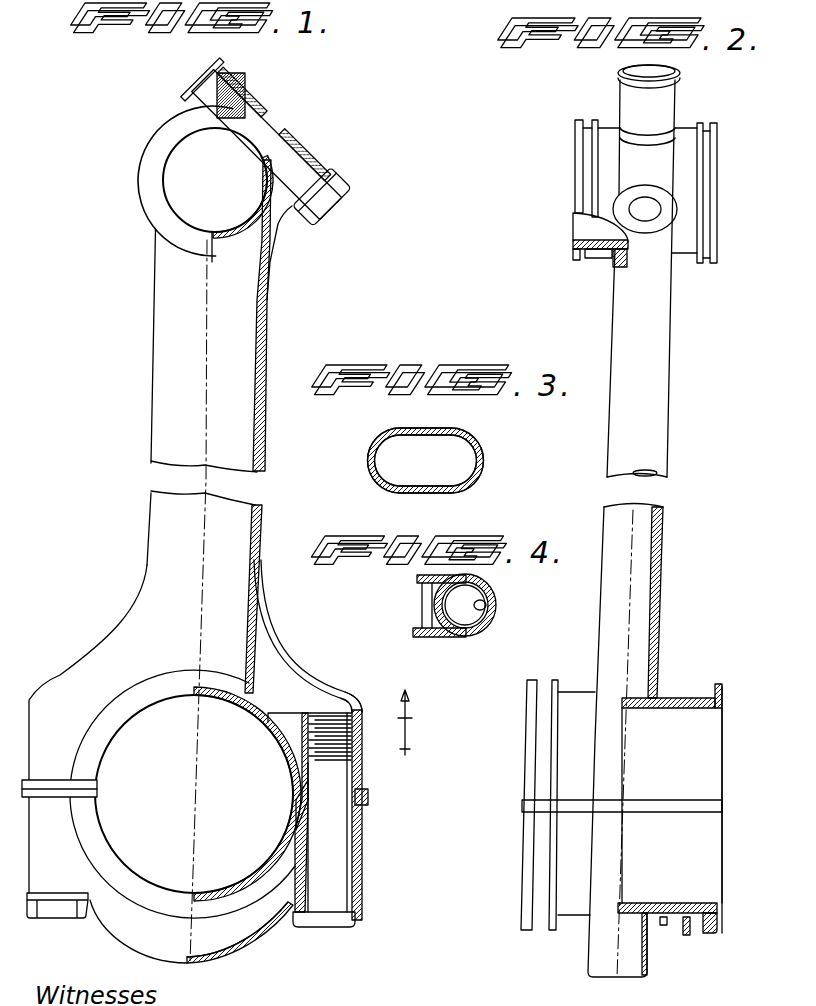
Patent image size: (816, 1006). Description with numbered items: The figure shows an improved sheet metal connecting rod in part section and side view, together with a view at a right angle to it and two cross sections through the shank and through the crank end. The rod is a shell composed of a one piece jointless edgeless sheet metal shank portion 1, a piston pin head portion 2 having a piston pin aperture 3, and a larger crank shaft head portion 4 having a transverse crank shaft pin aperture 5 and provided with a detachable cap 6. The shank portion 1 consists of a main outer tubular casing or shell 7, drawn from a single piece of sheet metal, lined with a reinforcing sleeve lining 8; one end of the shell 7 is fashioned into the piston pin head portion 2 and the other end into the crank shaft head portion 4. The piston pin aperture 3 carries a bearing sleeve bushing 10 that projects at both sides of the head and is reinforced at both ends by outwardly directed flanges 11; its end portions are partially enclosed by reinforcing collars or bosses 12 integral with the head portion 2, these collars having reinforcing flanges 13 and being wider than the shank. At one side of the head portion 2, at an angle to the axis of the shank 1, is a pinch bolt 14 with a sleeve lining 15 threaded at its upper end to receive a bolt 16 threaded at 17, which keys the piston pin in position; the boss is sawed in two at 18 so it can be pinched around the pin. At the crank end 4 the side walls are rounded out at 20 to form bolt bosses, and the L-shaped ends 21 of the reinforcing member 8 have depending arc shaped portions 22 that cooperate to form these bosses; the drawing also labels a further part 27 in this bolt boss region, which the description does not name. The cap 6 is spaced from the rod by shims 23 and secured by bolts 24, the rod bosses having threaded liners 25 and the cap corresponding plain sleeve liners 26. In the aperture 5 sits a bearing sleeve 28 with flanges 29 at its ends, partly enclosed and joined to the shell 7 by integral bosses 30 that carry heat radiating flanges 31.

In FIG. 1, the shank portion 1 is at (152, 362).
In FIG. 2, the shank portion 1 is at (656, 443).
In FIG. 3, the shank portion 1 is at (392, 437).
In FIG. 1, the piston pin head portion 2 is at (148, 142).
In FIG. 2, the piston pin head portion 2 is at (676, 173).
In FIG. 1, the piston pin aperture 3 is at (180, 195).
In FIG. 1, the crank shaft head portion 4 is at (50, 677).
In FIG. 2, the crank shaft head portion 4 is at (556, 763).
In FIG. 4, the crank shaft head portion 4 is at (447, 633).
In FIG. 1, the crank shaft pin aperture 5 is at (108, 757).
In FIG. 1, the detachable cap 6 is at (118, 923).
In FIG. 2, the detachable cap 6 is at (597, 887).
In FIG. 1, the main outer tubular casing or shell 7 is at (262, 505).
In FIG. 2, the main outer tubular casing or shell 7 is at (613, 513).
In FIG. 3, the main outer tubular casing or shell 7 is at (471, 441).
In FIG. 1, the reinforcing sleeve lining 8 is at (251, 605).
In FIG. 2, the reinforcing sleeve lining 8 is at (625, 263).
In FIG. 3, the reinforcing sleeve lining 8 is at (447, 489).
In FIG. 1, the bearing sleeve bushing 10 is at (244, 232).
In FIG. 2, the bearing sleeve bushing 10 is at (575, 226).
In FIG. 1, the outwardly directed flanges 11 is at (172, 240).
In FIG. 2, the outwardly directed flanges 11 is at (572, 256).
In FIG. 2, the reinforcing collars or bosses 12 is at (607, 263).
In FIG. 2, the outwardly directed flanges 13 is at (592, 258).
In FIG. 1, the pinch bolt 14 is at (316, 159).
In FIG. 2, the pinch bolt 14 is at (637, 117).
In FIG. 1, the sleeve lining 15 is at (286, 210).
In FIG. 1, the bolt 16 is at (268, 155).
In FIG. 1, the threaded portion 17 is at (230, 105).
In FIG. 1, the saw cut 18 is at (272, 118).
In FIG. 1, the rounded out side walls 20 is at (365, 745).
In FIG. 4, the rounded out side walls 20 is at (494, 585).
In FIG. 1, the L-shaped ends 21 is at (289, 710).
In FIG. 4, the L-shaped ends 21 is at (418, 582).
In FIG. 1, the depending arc shaped portions 22 is at (302, 733).
In FIG. 4, the depending arc shaped portions 22 is at (432, 607).
In FIG. 1, the shims 23 is at (46, 790).
In FIG. 2, the shims 23 is at (655, 811).
In FIG. 1, the bolts 24 is at (330, 842).
In FIG. 1, the threaded liners 25 is at (362, 708).
In FIG. 4, the threaded liners 25 is at (488, 606).
In FIG. 1, the plain sleeve liners 26 is at (292, 880).
In FIG. 1, the wedge 27 is at (300, 760).
In FIG. 1, the bearing sleeve 28 is at (200, 893).
In FIG. 2, the bearing sleeve 28 is at (700, 703).
In FIG. 2, the flanges 29 is at (723, 690).
In FIG. 2, the bosses 30 is at (578, 718).
In FIG. 2, the heat radiating flanges 31 is at (660, 680).